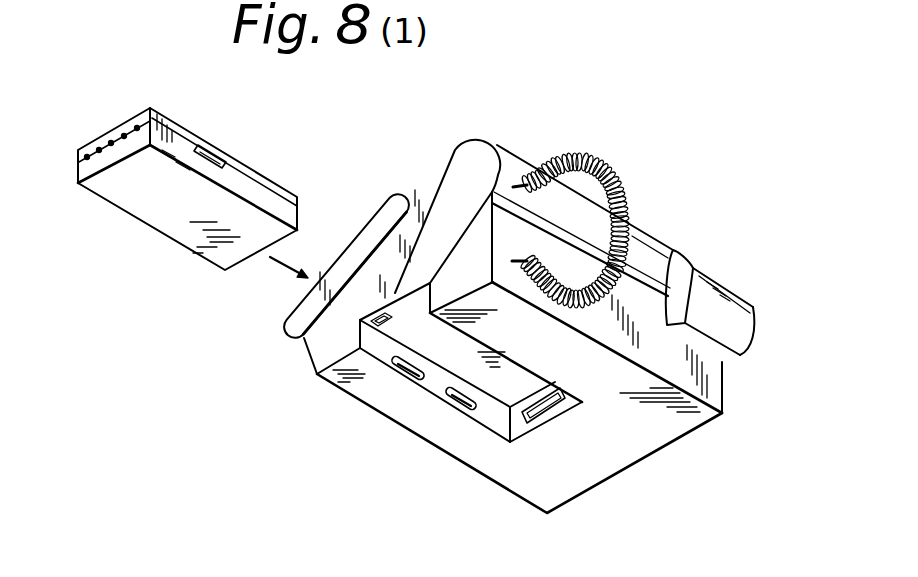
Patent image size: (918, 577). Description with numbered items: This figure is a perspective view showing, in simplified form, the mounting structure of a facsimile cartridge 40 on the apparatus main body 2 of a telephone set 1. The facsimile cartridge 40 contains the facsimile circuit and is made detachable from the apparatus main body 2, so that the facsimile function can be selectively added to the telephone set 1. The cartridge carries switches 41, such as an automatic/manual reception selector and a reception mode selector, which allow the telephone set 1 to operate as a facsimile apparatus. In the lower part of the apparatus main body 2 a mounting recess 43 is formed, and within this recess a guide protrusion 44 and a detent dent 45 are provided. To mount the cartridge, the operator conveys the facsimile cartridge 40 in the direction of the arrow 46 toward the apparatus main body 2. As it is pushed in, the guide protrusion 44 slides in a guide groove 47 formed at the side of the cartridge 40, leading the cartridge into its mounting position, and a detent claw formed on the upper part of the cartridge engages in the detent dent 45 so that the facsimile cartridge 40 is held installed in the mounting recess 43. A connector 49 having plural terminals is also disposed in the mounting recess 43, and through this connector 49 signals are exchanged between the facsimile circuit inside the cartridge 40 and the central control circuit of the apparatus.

The telephone set 1 is at (671, 164).
The apparatus main body 2 is at (712, 383).
The facsimile cartridge 40 is at (177, 177).
The switches 41 is at (136, 127).
The mounting recess 43 is at (480, 354).
The guide protrusion 44 is at (472, 406).
The detent dent 45 is at (398, 291).
The arrow 46 is at (280, 262).
The guide groove 47 is at (240, 177).
The connector 49 is at (545, 411).